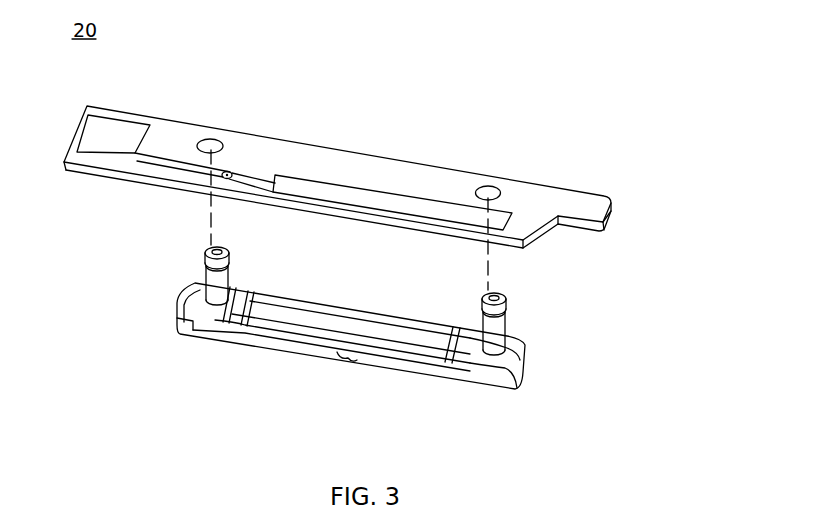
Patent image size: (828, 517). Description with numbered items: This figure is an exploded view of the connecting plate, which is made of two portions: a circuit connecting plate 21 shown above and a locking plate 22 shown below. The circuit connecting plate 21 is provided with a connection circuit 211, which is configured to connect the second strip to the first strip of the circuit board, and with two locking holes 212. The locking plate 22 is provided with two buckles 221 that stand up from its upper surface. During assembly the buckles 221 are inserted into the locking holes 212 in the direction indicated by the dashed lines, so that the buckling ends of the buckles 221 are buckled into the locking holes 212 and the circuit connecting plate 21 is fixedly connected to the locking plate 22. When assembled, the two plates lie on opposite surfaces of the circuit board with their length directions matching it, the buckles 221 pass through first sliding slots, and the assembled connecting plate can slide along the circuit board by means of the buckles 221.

The circuit connecting plate 21 is at (538, 193).
The connection circuit 211 is at (251, 177).
The locking holes 212 is at (483, 188).
The locking plate 22 is at (295, 347).
The buckles 221 is at (507, 318).